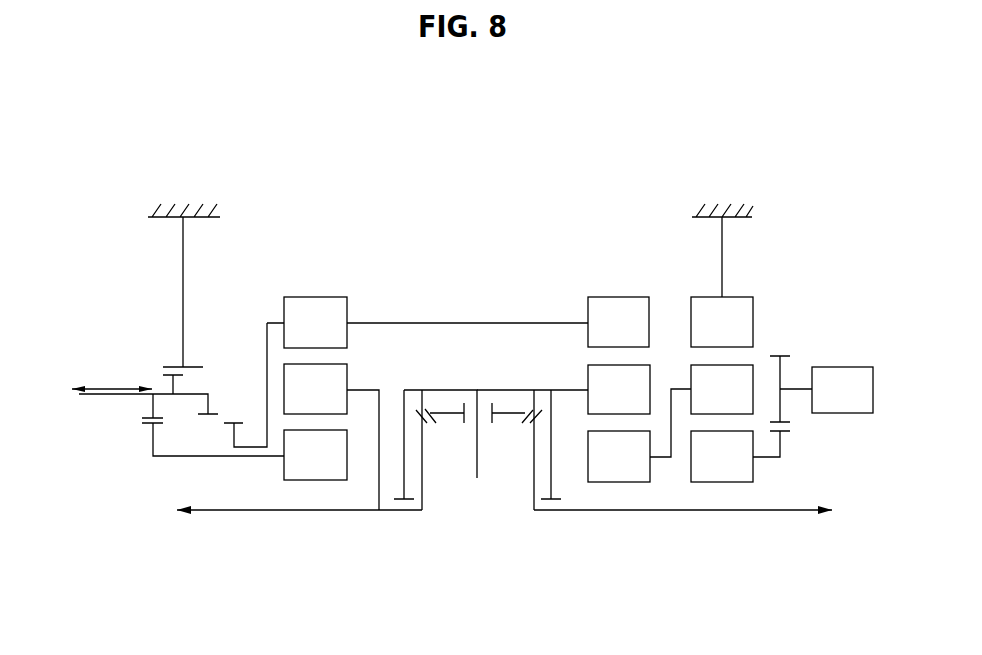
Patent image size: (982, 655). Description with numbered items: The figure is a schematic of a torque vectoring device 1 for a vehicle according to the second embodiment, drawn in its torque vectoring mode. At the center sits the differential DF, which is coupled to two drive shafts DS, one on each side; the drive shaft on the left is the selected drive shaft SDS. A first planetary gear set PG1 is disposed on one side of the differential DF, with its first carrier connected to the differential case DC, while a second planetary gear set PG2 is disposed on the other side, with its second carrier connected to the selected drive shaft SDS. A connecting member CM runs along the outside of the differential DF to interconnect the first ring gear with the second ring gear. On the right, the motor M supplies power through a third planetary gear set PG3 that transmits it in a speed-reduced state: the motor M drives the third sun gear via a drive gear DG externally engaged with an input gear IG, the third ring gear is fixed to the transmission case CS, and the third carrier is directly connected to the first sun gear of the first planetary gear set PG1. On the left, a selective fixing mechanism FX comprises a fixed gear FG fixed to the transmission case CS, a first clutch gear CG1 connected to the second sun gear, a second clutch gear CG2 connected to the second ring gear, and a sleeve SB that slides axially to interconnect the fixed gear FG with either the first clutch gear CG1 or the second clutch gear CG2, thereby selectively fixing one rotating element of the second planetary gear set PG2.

The torque vectoring device 1 is at (671, 228).
The transmission case CS is at (195, 205).
The first planetary gear set PG1 is at (592, 381).
The second planetary gear set PG2 is at (346, 379).
The third planetary gear set PG3 is at (759, 284).
The connecting member CM is at (452, 322).
The differential case DC is at (445, 389).
The differential DF is at (503, 375).
The drive gear DG is at (787, 354).
The input gear IG is at (785, 432).
The motor M is at (842, 390).
The fixed gear FG is at (165, 365).
The sleeve SB is at (168, 383).
The selective fixing mechanism FX is at (126, 416).
The first clutch gear CG1 is at (150, 426).
The second clutch gear CG2 is at (234, 420).
The selected drive shaft SDS is at (257, 512).
The drive shaft DS is at (695, 512).